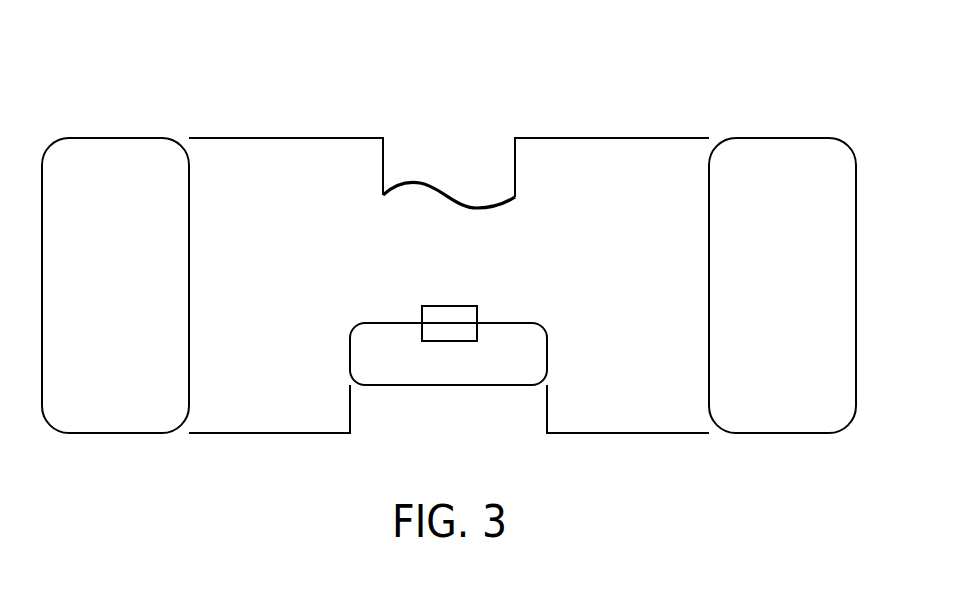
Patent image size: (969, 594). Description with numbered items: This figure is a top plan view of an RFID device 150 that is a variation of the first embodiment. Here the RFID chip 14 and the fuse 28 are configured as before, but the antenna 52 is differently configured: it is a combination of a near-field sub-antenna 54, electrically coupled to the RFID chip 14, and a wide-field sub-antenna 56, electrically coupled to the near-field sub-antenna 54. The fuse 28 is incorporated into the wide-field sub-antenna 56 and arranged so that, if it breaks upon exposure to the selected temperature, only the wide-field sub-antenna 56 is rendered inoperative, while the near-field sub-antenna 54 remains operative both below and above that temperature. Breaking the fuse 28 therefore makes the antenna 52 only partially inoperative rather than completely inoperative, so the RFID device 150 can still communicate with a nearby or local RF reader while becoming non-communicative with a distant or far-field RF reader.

The wheel assembly 150 is at (150, 88).
The antenna 52 is at (270, 138).
The wide-field sub-antenna 56 is at (620, 138).
The fuse 28 is at (445, 188).
The near-field sub-antenna 54 is at (447, 386).
The RFID chip 14 is at (450, 305).